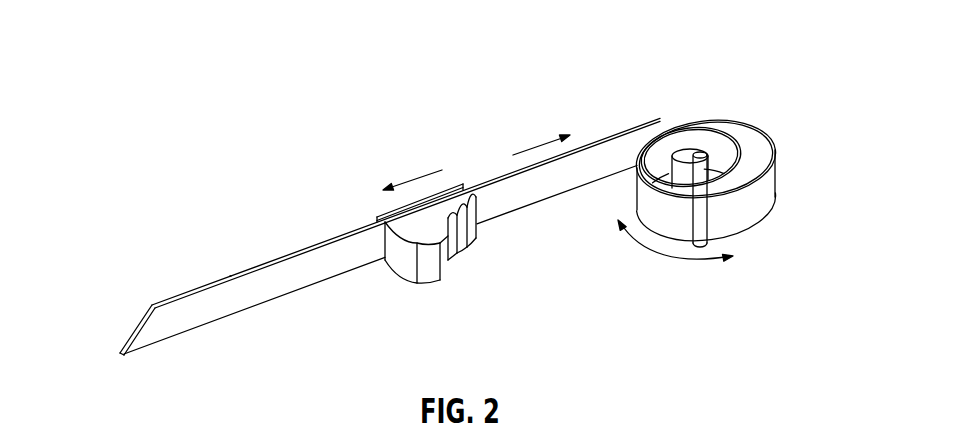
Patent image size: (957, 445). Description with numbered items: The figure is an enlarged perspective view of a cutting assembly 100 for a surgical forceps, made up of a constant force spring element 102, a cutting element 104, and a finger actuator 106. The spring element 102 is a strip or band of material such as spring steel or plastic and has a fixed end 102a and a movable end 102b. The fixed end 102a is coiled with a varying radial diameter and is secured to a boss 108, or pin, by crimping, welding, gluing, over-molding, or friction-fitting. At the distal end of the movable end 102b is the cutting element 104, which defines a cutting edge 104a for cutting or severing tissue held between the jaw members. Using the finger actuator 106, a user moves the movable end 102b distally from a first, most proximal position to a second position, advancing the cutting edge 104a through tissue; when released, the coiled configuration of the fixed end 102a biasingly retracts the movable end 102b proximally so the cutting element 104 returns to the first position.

The cutting assembly 100 is at (215, 182).
The constant force spring element 102 is at (505, 195).
The fixed end 102a is at (688, 152).
The movable end 102b is at (200, 297).
The cutting element 104 is at (150, 333).
The cutting edge 104a is at (130, 335).
The finger actuator 106 is at (430, 236).
The boss 108 is at (700, 152).